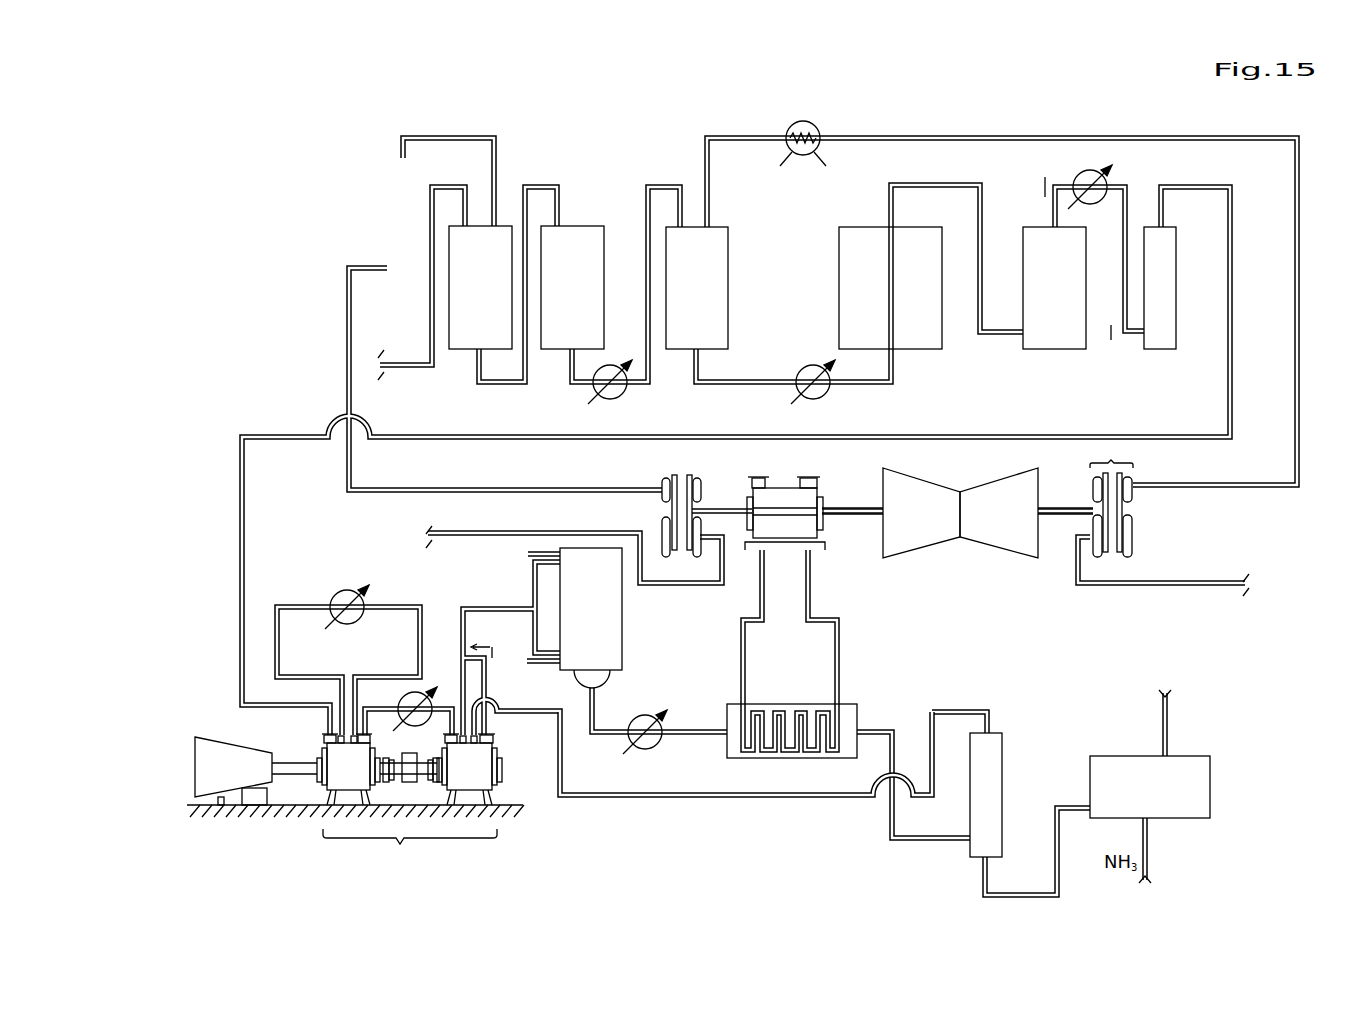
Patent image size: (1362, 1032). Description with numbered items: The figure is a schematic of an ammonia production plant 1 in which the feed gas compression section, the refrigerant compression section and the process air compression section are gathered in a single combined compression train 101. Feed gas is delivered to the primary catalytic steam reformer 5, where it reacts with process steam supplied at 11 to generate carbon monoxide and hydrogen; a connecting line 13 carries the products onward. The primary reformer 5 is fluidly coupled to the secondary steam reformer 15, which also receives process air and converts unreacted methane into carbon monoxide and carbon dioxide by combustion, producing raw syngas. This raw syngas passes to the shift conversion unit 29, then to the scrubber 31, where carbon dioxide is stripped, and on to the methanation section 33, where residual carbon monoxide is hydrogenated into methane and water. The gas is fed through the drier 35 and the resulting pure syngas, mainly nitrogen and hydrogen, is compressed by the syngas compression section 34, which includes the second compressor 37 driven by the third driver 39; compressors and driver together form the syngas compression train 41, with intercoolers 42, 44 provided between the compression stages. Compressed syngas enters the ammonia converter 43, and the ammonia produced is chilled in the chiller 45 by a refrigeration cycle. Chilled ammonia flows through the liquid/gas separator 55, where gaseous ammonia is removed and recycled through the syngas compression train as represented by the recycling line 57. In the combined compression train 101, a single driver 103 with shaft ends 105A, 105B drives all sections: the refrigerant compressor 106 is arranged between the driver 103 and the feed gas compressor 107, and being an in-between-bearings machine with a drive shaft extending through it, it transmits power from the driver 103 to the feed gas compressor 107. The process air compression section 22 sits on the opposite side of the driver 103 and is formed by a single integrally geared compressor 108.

The ammonia production plant 1 is at (336, 201).
The primary catalytic steam reformer 5 is at (494, 289).
The process steam delivery 11 is at (430, 325).
The connecting line 13 is at (500, 385).
The secondary steam reformer 15 is at (592, 289).
The process air compression section 22 is at (1111, 454).
The shift conversion unit 29 is at (725, 302).
The scrubber 31 is at (848, 311).
The methanation section 33 is at (1066, 289).
The syngas compression section 34 is at (330, 760).
The drier 35 is at (1170, 302).
The second compressor 37 is at (485, 770).
The third driver 39 is at (213, 770).
The syngas compression train 41 is at (278, 825).
The intercooler 42 is at (344, 590).
The ammonia converter 43 is at (610, 632).
The intercooler 44 is at (400, 703).
The chiller 45 is at (788, 712).
The liquid/gas separator 55 is at (998, 762).
The recycling line 57 is at (797, 788).
The combined compression train 101 is at (1248, 525).
The single driver 103 is at (928, 497).
The shaft end 105A is at (1066, 505).
The shaft end 105B is at (853, 508).
The refrigerant compressor 106 is at (775, 495).
The feed gas compressor 107 is at (700, 482).
The integrally geared compressor 108 is at (1113, 519).